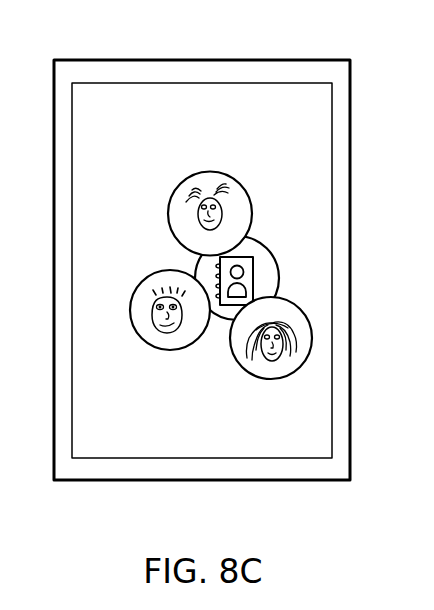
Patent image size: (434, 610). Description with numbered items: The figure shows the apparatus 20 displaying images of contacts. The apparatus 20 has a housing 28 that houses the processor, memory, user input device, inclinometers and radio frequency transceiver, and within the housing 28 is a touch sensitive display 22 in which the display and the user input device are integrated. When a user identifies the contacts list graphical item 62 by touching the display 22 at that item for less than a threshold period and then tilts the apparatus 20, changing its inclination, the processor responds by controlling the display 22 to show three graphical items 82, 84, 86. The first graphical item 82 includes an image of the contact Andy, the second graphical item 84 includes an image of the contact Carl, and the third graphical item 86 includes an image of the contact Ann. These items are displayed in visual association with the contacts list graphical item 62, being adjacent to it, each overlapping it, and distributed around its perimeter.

The apparatus 20 is at (305, 489).
The touch sensitive display 22 is at (128, 83).
The housing 28 is at (203, 60).
The contacts list graphical item 62 is at (276, 259).
The first graphical item 82 is at (208, 172).
The second graphical item 84 is at (170, 351).
The third graphical item 86 is at (270, 380).